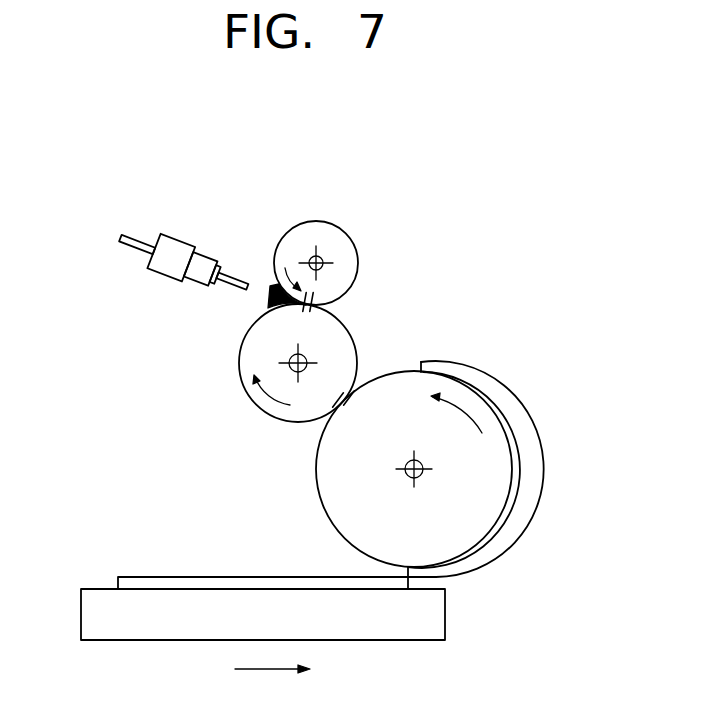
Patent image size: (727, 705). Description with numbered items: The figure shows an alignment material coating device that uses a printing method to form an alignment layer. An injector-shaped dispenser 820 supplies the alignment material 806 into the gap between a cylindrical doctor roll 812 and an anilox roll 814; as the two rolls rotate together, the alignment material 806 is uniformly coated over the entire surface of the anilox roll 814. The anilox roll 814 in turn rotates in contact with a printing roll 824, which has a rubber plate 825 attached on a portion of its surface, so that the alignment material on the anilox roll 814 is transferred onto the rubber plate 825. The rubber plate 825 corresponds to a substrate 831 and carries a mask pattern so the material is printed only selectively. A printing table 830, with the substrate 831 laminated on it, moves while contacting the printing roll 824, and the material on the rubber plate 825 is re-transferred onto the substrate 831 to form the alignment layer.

The dispenser 820 is at (164, 241).
The doctor roll 812 is at (330, 231).
The alignment material 806 is at (269, 287).
The anilox roll 814 is at (245, 382).
The printing roll 824 is at (332, 508).
The rubber plate 825 is at (518, 452).
The substrate 831 is at (118, 582).
The printing table 830 is at (87, 612).